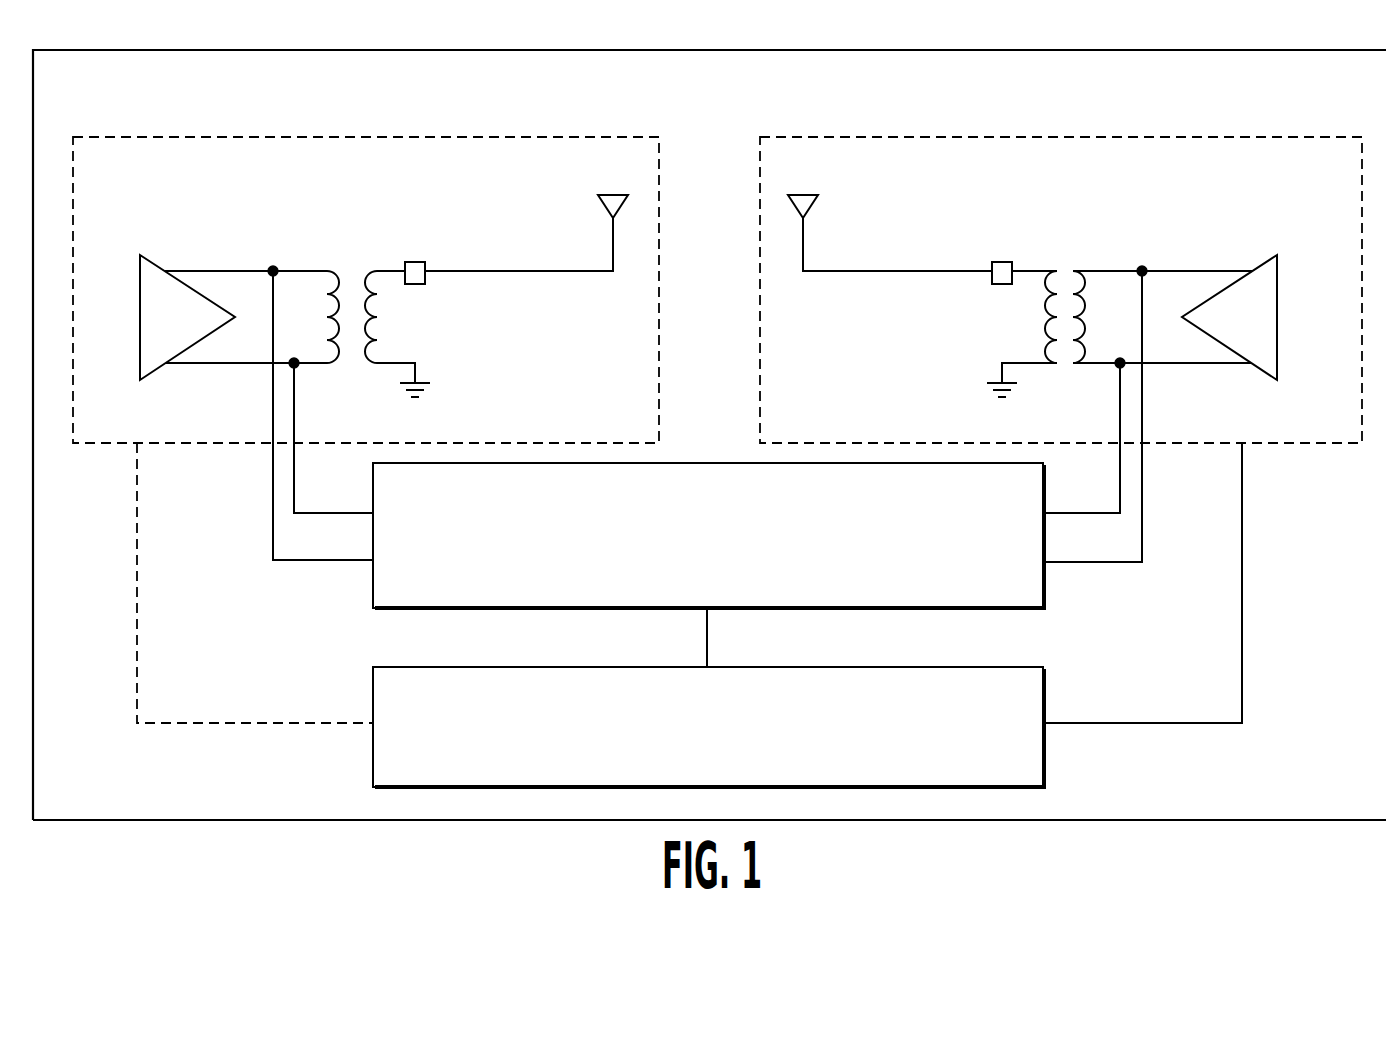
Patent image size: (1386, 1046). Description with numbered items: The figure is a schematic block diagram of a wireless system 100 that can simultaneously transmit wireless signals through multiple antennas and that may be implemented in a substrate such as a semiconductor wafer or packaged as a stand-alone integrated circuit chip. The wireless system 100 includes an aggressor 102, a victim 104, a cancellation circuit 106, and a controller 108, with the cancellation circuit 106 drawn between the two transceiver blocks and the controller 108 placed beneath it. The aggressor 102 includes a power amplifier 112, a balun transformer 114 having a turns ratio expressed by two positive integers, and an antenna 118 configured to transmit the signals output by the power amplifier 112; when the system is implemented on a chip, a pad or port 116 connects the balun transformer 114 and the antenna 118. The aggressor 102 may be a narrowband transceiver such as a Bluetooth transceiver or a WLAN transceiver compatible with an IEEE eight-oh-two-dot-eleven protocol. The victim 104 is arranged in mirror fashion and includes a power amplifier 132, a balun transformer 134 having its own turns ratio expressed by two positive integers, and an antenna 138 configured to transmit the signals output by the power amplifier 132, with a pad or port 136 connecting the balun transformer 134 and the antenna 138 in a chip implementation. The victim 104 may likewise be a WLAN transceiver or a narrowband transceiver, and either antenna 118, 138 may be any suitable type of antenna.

The wireless system 100 is at (1265, 50).
The aggressor 102 is at (243, 135).
The victim 104 is at (1168, 135).
The cancellation circuit 106 is at (707, 463).
The controller 108 is at (373, 688).
The power amplifier 112 is at (152, 262).
The balun transformer 114 is at (343, 290).
The pad or port 116 is at (425, 281).
The antenna 118 is at (606, 213).
The power amplifier 132 is at (1278, 281).
The balun transformer 134 is at (1053, 293).
The pad or port 136 is at (992, 280).
The antenna 138 is at (815, 212).